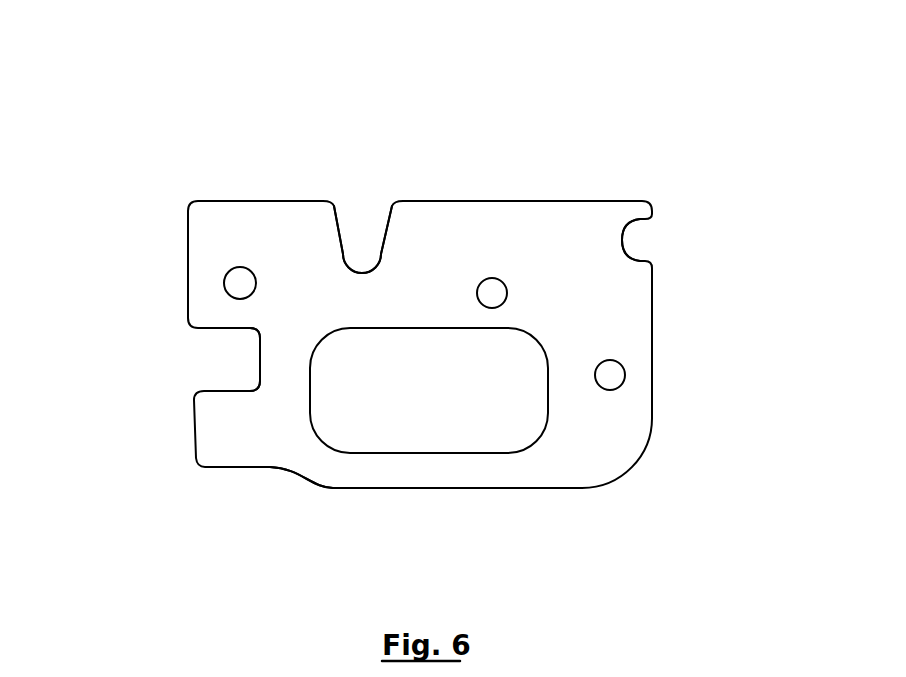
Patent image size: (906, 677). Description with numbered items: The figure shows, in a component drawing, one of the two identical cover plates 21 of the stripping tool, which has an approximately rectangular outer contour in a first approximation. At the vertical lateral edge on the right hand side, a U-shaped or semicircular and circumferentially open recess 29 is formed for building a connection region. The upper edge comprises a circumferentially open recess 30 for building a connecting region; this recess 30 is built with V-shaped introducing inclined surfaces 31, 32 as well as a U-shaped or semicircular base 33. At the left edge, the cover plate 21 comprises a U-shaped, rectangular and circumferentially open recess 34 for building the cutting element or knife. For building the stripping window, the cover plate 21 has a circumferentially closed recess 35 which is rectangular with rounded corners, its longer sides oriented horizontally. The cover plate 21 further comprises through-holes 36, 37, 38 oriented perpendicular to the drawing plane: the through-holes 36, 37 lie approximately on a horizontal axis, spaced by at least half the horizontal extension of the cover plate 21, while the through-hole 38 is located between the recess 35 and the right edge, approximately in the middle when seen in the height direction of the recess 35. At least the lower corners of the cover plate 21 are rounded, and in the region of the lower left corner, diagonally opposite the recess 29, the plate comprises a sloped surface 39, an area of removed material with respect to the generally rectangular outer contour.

The cover plate 21 is at (461, 158).
The recess 29 is at (622, 240).
The recess 30 is at (365, 226).
The introducing inclined surface 31 is at (345, 215).
The introducing inclined surface 32 is at (383, 222).
The base 33 is at (353, 268).
The recess 34 is at (237, 358).
The recess 35 is at (443, 452).
The through-hole 36 is at (240, 283).
The through-hole 37 is at (493, 290).
The through-hole 38 is at (610, 375).
The sloped surface 39 is at (292, 472).